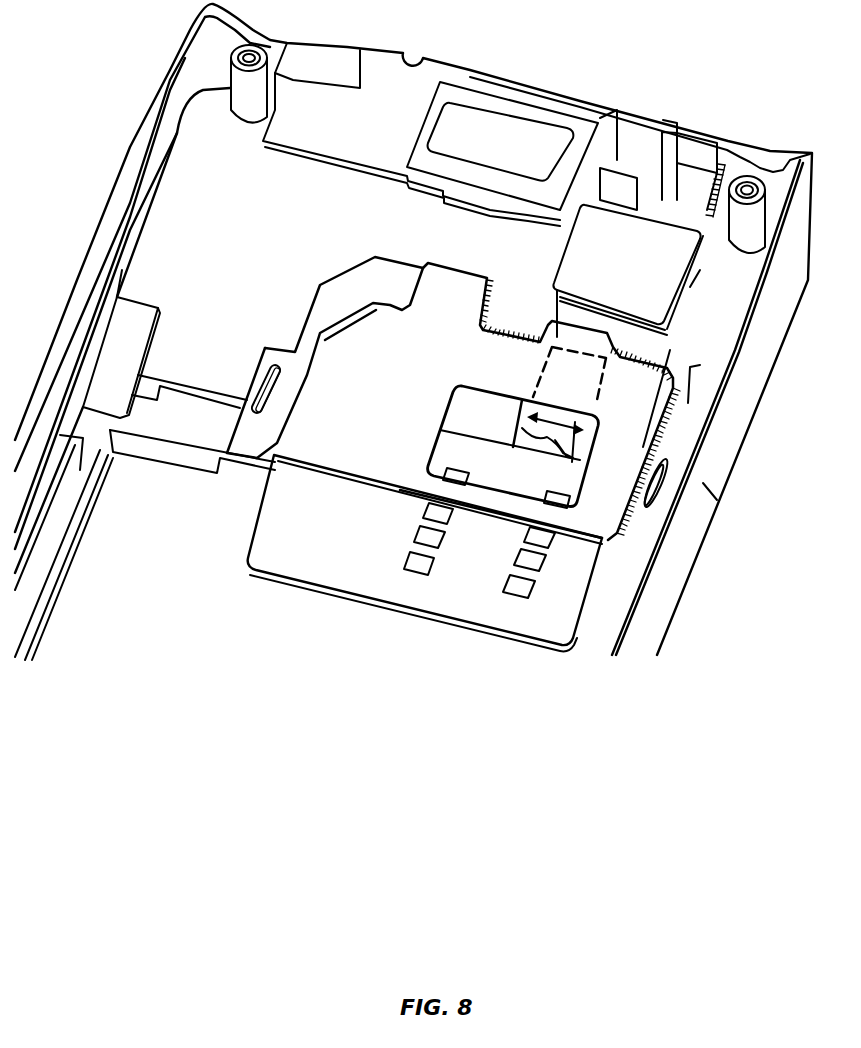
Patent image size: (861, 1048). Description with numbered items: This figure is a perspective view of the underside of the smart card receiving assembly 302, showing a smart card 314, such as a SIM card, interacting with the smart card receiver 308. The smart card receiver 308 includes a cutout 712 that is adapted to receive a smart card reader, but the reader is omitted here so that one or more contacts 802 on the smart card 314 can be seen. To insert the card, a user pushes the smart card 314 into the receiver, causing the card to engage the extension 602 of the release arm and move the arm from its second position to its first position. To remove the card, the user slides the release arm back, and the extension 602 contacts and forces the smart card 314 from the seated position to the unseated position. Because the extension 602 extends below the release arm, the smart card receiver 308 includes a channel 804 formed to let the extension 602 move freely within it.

The smart card receiving assembly 302 is at (168, 520).
The smart card receiver 308 is at (603, 490).
The smart card 314 is at (300, 552).
The extension 602 is at (612, 445).
The cutout 712 is at (467, 413).
The contacts 802 is at (520, 587).
The channel 804 is at (570, 411).